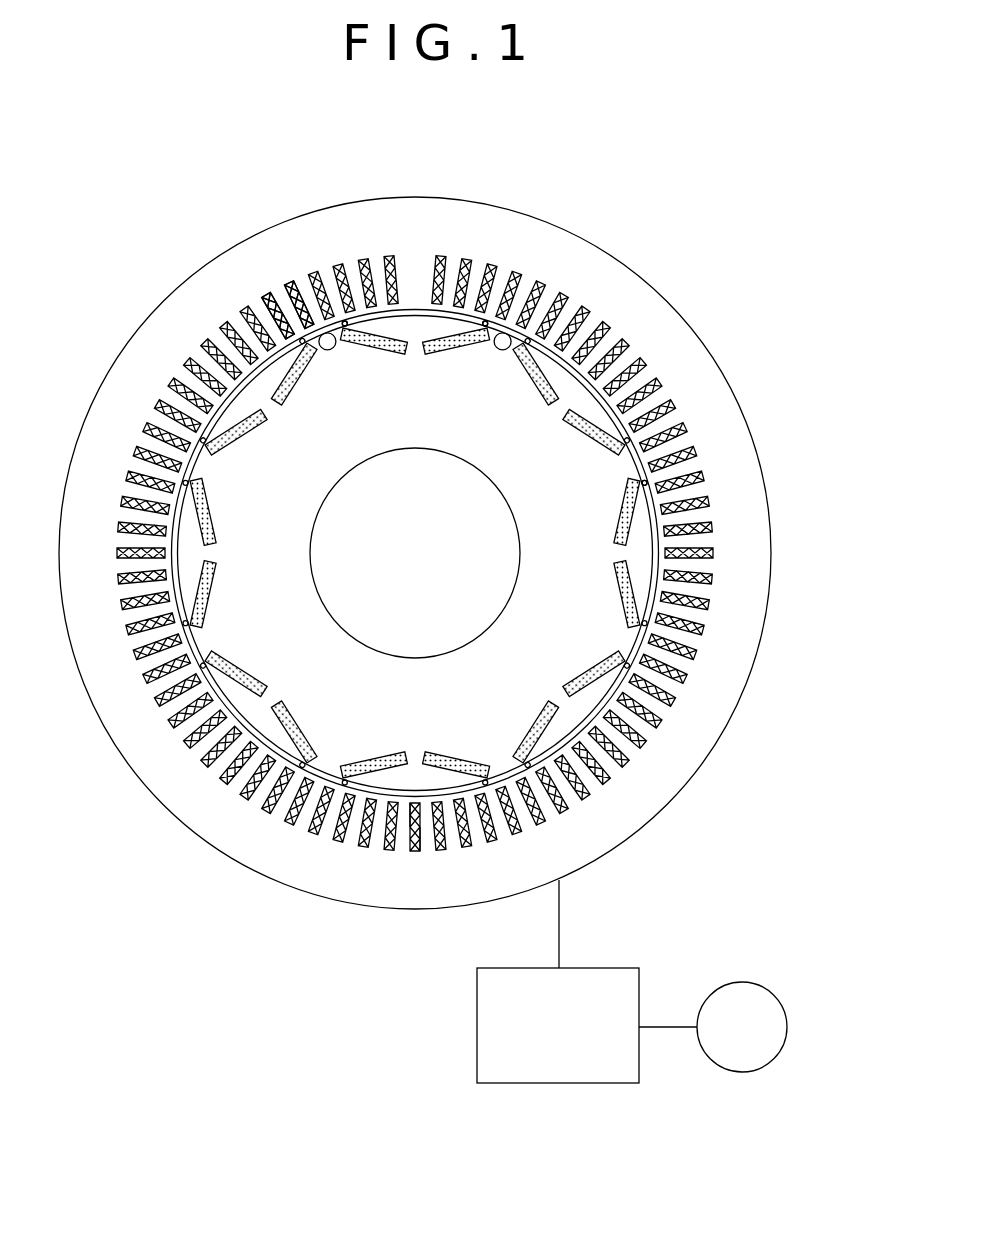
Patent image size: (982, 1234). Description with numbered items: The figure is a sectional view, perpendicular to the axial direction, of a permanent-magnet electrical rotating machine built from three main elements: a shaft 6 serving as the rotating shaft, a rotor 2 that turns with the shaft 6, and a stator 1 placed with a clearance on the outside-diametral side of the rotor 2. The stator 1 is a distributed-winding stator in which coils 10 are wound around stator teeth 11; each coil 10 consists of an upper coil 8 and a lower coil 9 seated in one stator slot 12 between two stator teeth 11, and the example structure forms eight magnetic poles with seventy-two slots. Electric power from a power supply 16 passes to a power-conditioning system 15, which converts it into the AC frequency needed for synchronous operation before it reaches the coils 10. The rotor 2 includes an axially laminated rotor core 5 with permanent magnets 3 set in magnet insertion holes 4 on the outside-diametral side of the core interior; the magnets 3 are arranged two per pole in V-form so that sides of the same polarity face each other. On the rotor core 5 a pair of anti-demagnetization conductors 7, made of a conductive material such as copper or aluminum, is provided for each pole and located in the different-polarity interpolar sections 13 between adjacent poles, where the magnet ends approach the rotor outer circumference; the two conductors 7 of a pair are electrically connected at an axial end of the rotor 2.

The stator 1 is at (575, 232).
The rotor 2 is at (597, 387).
The permanent magnet 3 is at (632, 512).
The magnet insertion hole 4 is at (632, 477).
The rotor core 5 is at (618, 643).
The shaft 6 is at (468, 612).
The anti-demagnetization conductor 7 is at (485, 328).
The upper coil 8 is at (415, 813).
The lower coil 9 is at (413, 840).
The coil 10 is at (328, 887).
The stator tooth 11 is at (283, 305).
The stator slot 12 is at (205, 343).
The interpolar section 13 is at (328, 333).
The power-conditioning system 15 is at (480, 1024).
The power supply 16 is at (742, 985).